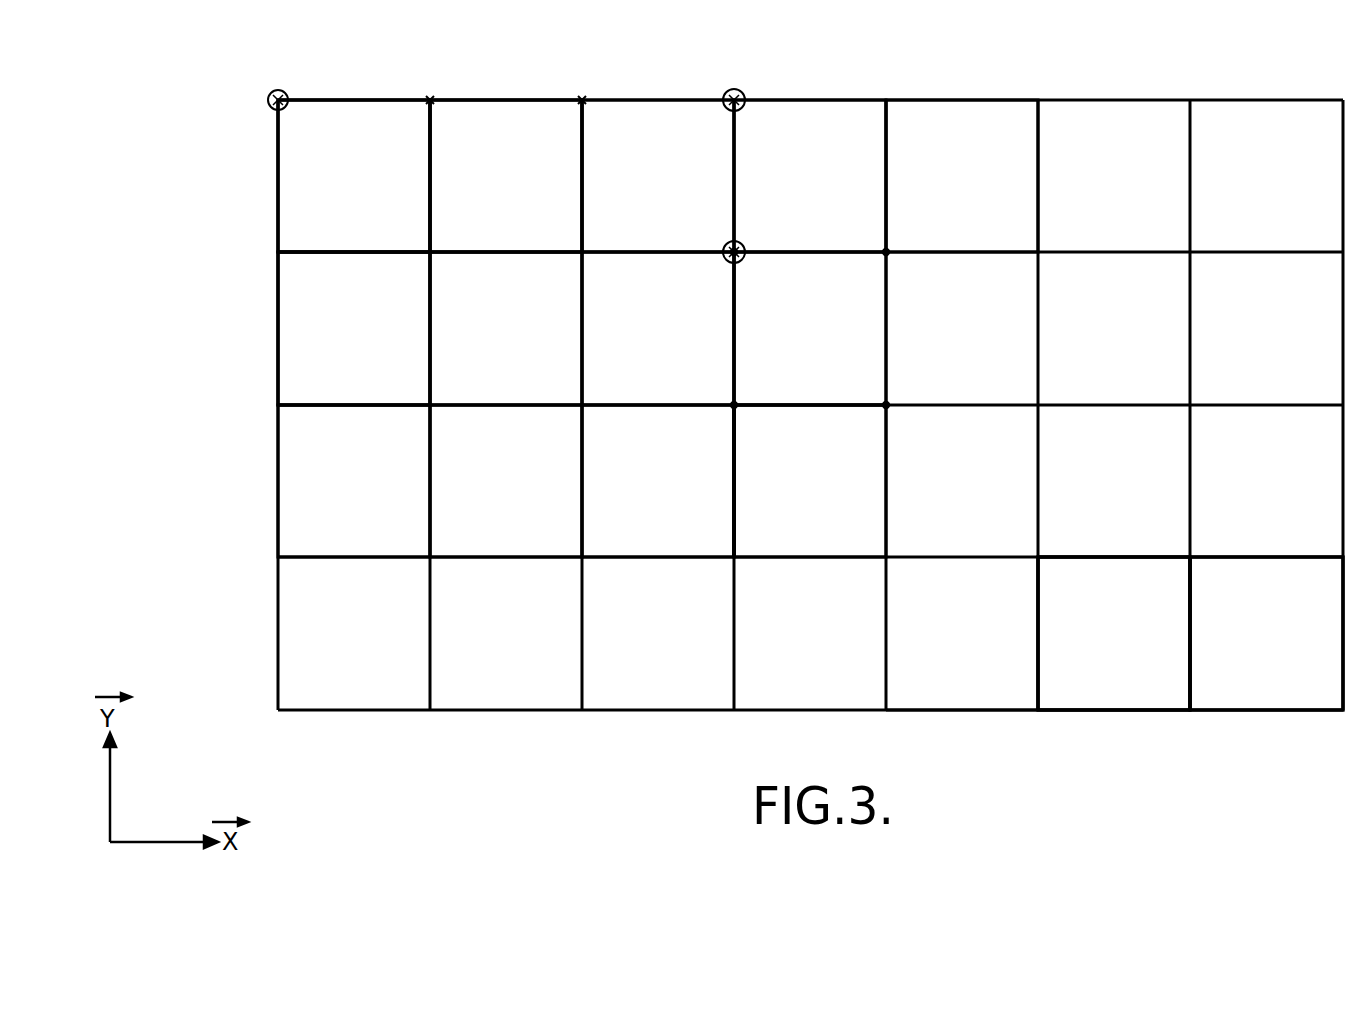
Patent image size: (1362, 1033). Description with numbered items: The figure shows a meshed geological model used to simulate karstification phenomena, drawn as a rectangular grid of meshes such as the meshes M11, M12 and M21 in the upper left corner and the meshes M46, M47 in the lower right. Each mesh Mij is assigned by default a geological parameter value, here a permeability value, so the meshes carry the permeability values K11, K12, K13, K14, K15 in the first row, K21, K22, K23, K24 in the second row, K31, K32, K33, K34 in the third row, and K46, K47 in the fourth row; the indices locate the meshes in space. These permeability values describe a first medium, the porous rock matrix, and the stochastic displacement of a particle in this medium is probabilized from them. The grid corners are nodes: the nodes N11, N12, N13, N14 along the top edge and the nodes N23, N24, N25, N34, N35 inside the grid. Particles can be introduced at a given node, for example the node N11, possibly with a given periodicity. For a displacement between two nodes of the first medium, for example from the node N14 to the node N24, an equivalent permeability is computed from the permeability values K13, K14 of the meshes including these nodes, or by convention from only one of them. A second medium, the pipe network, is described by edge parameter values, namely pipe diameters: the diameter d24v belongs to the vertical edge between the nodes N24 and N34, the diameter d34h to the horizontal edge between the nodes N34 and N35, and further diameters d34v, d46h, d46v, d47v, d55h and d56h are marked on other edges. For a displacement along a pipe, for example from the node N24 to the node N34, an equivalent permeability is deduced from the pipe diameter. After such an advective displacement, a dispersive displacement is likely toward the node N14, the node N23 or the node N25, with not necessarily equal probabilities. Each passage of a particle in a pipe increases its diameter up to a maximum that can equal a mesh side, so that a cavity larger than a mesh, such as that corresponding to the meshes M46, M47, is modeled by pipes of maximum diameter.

The permeability value K11 is at (354, 176).
The permeability value K12 is at (506, 176).
The permeability value K13 is at (658, 176).
The permeability value K14 is at (810, 176).
The permeability value K15 is at (962, 176).
The permeability value K21 is at (354, 328).
The permeability value K22 is at (506, 328).
The permeability value K23 is at (658, 328).
The permeability value K24 is at (810, 328).
The permeability value K31 is at (354, 481).
The permeability value K32 is at (506, 481).
The permeability value K33 is at (658, 481).
The permeability value K34 is at (810, 481).
The permeability value K46 is at (1114, 633).
The permeability value K47 is at (1266, 633).
The node N11 is at (284, 87).
The node N12 is at (436, 84).
The node N13 is at (590, 84).
The node N14 is at (742, 87).
The node N23 is at (666, 273).
The node N24 is at (745, 228).
The node N25 is at (912, 273).
The node N34 is at (736, 404).
The node N35 is at (912, 390).
The mesh M11 is at (337, 130).
The mesh M12 is at (490, 130).
The mesh M21 is at (298, 358).
The mesh M46 is at (1155, 680).
The mesh M47 is at (1278, 680).
The pipe diameter d24v is at (739, 330).
The pipe diameter d34h is at (829, 367).
The pipe diameter d34v is at (764, 481).
The pipe diameter d46h is at (1114, 540).
The pipe diameter d46v is at (1068, 633).
The pipe diameter d47v is at (1220, 633).
The pipe diameter d55h is at (962, 732).
The pipe diameter d56h is at (1114, 732).